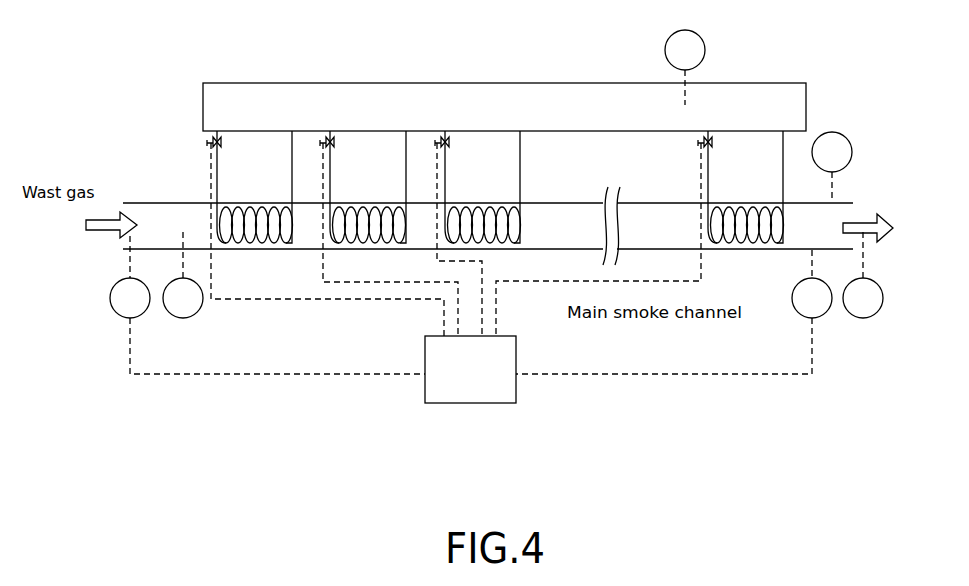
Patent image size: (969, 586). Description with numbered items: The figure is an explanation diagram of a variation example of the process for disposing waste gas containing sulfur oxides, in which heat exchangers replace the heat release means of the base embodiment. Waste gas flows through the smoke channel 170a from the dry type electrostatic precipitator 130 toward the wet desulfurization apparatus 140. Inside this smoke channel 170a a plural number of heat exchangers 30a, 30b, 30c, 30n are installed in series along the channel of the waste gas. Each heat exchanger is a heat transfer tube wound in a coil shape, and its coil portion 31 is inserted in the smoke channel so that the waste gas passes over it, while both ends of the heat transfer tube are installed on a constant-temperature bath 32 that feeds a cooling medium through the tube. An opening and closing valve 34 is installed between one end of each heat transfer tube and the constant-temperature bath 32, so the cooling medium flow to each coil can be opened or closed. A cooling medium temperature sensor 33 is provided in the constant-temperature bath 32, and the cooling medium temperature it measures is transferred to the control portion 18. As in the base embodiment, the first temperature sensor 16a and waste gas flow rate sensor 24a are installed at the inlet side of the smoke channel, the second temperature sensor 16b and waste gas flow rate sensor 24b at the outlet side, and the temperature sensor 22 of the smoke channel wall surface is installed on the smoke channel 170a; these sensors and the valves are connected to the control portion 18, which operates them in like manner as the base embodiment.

The constant-temperature bath 32 is at (504, 107).
The cooling medium temperature sensor 33 is at (705, 48).
The temperature sensor of the smoke channel wall surface 22 is at (847, 137).
The smoke channel 170a is at (407, 252).
The dry type electrostatic precipitator 130 is at (83, 225).
The wet desulfurization apparatus 140 is at (891, 228).
The heat exchanger 30a is at (268, 187).
The heat exchanger 30b is at (334, 165).
The heat exchanger 30c is at (523, 170).
The heat exchanger 30n is at (738, 188).
The coil portion 31 is at (225, 207).
The opening and closing valve 34 is at (209, 143).
The control portion 18 is at (472, 398).
The first temperature sensor 16a is at (115, 315).
The waste gas flow rate sensor 24a is at (183, 318).
The second temperature sensor 16b is at (802, 317).
The waste gas flow rate sensor 24b is at (862, 318).